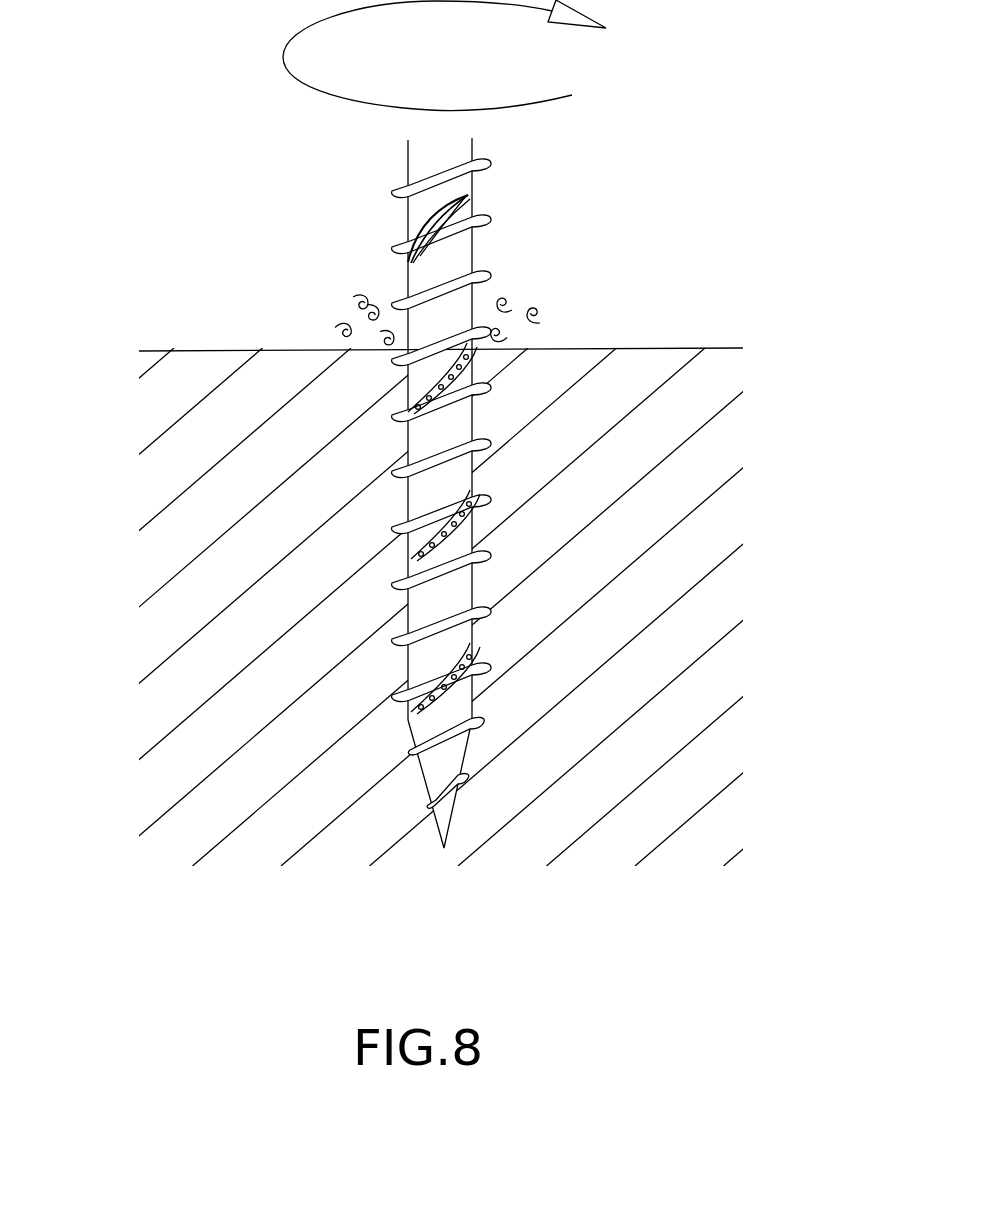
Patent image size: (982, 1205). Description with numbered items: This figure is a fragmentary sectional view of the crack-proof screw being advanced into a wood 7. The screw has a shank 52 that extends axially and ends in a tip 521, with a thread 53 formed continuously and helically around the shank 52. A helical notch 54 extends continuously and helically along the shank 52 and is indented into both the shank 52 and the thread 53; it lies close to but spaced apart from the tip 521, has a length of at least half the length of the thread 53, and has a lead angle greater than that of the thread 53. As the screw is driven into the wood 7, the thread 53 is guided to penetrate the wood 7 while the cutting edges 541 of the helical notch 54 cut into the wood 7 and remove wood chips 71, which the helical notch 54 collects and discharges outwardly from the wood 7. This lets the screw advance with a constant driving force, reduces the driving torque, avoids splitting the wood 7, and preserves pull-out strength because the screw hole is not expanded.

The wood 7 is at (715, 363).
The wood chips 71 is at (477, 382).
The shank 52 is at (463, 247).
The tip 521 is at (443, 850).
The thread 53 is at (487, 160).
The helical notch 54 is at (437, 228).
The cutting edges 541 is at (445, 680).